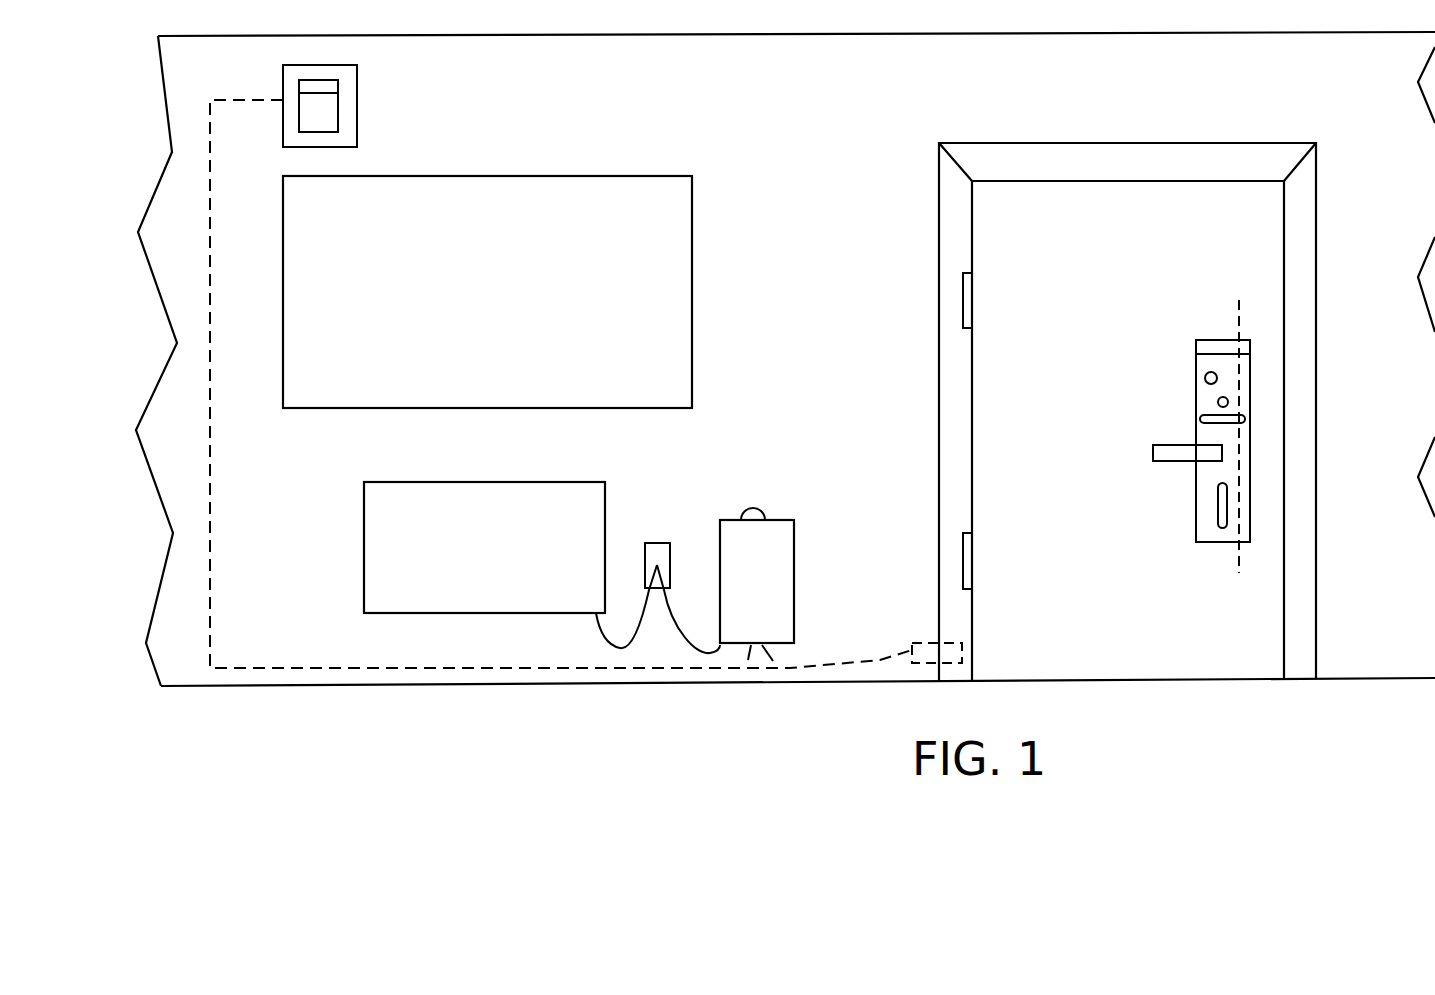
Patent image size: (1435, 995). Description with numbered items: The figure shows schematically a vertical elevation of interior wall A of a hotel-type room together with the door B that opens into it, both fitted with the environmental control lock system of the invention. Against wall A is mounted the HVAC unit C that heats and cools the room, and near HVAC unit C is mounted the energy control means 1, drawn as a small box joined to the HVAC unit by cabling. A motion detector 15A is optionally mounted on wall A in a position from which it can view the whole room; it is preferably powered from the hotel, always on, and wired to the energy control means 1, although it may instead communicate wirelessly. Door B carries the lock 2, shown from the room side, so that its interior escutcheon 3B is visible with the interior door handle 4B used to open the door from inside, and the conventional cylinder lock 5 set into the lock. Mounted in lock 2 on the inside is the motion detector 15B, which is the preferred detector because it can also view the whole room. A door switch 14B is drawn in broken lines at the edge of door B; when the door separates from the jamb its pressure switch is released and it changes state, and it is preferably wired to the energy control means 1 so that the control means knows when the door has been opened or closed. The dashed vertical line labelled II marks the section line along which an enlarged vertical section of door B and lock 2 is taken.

The interior wall A is at (775, 206).
The motion detector 15A is at (372, 119).
The HVAC unit C is at (574, 497).
The energy control means 1 is at (775, 540).
The door switch 14B is at (920, 634).
The door B is at (1215, 200).
The lock 2 is at (1252, 448).
The motion detector 15B is at (1205, 374).
The interior escutcheon 3B is at (1203, 432).
The interior door handle 4B is at (1147, 453).
The cylinder lock 5 is at (1214, 520).
The section line II— II is at (1357, 258).